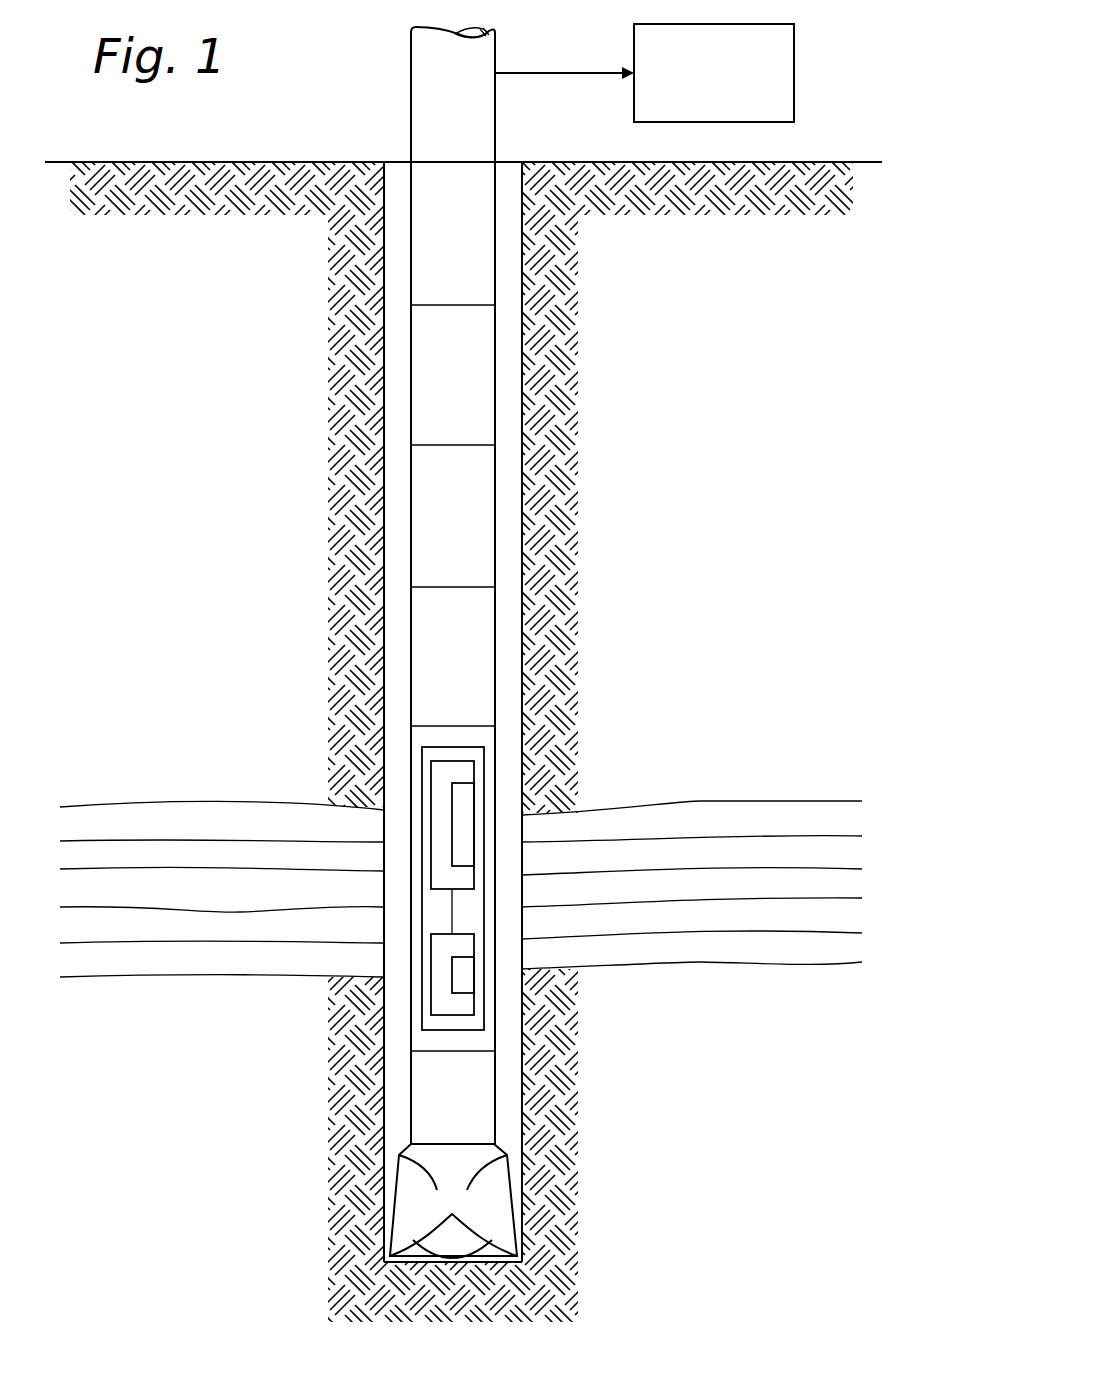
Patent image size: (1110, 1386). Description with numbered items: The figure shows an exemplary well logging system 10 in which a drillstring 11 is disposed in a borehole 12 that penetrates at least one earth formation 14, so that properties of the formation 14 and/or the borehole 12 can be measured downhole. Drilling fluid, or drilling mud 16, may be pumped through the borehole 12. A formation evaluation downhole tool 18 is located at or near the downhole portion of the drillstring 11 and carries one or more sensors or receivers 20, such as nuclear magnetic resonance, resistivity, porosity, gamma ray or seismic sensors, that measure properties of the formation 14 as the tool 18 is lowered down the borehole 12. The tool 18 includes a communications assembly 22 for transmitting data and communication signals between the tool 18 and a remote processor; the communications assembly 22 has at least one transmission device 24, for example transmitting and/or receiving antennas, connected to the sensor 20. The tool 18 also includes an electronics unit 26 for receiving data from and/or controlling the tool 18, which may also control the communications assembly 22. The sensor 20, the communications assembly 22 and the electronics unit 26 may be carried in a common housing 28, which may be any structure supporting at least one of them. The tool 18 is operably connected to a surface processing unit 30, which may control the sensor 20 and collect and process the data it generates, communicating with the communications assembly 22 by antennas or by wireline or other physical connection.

The well logging system 10 is at (320, 133).
The drillstring 11 is at (497, 513).
The borehole 12 is at (508, 574).
The earth formation 14 is at (255, 897).
The drilling mud 16 is at (520, 633).
The formation evaluation downhole tool 18 is at (415, 1004).
The sensor 20 is at (474, 1003).
The communications assembly 22 is at (474, 770).
The transmission device 24 is at (474, 798).
The electronics unit 26 is at (474, 974).
The housing 28 is at (422, 777).
The surface processing unit 30 is at (795, 71).